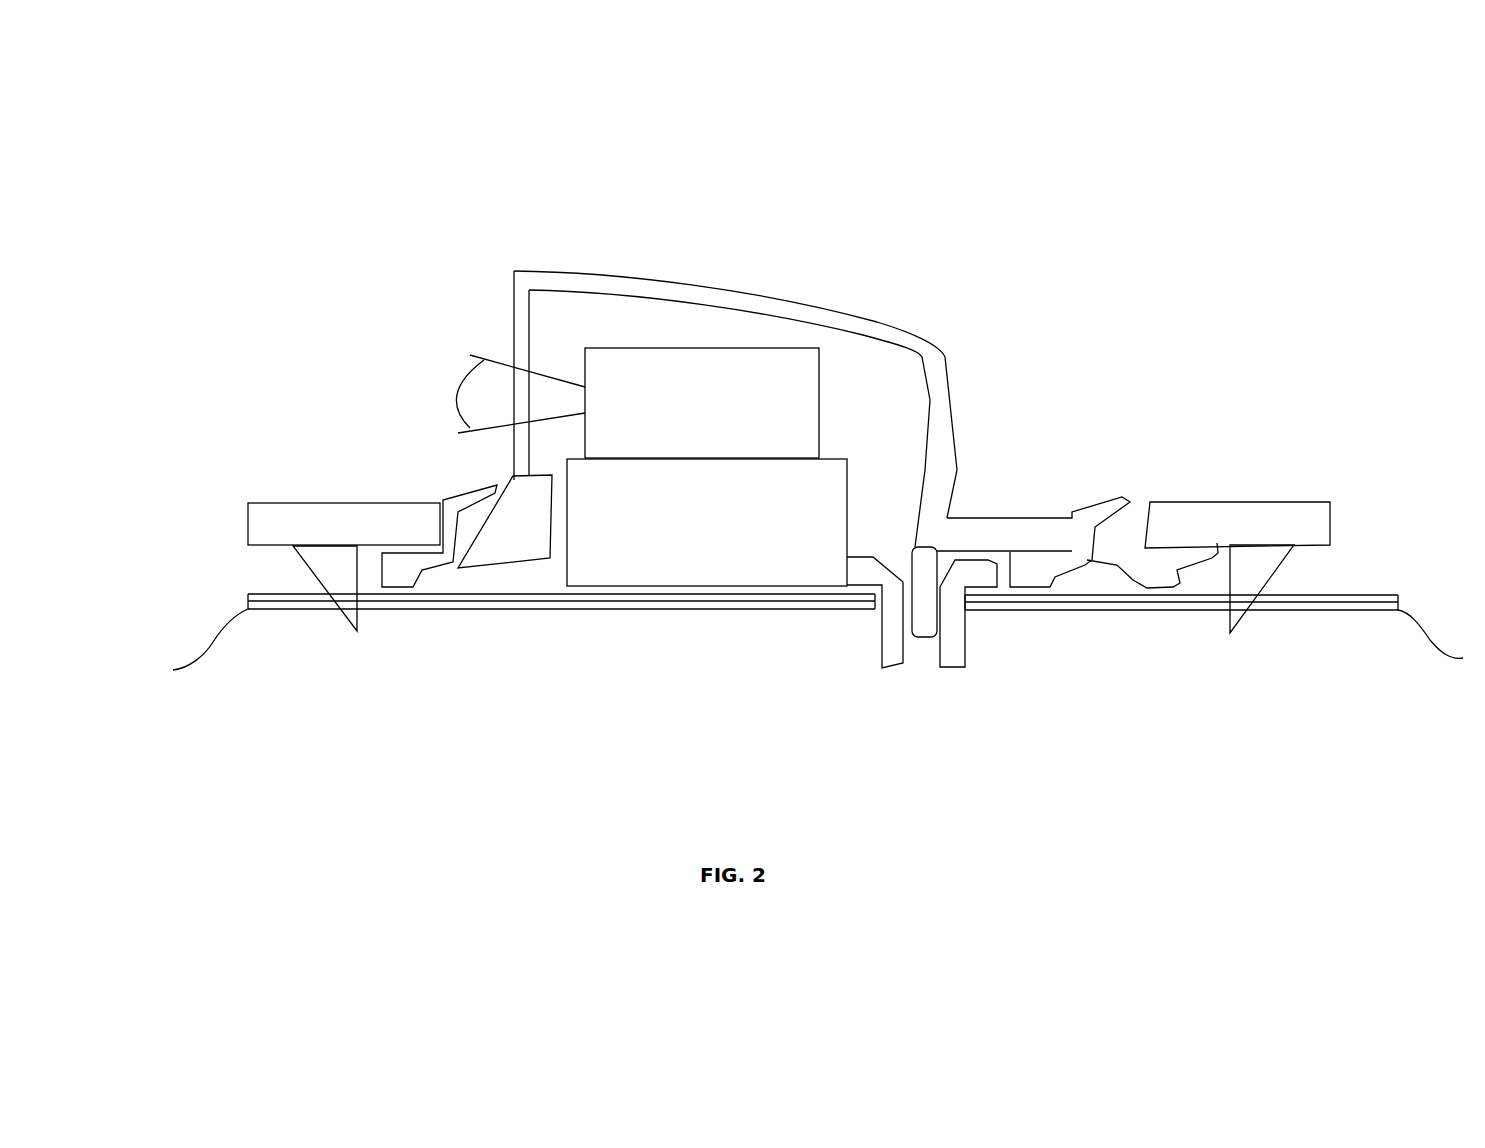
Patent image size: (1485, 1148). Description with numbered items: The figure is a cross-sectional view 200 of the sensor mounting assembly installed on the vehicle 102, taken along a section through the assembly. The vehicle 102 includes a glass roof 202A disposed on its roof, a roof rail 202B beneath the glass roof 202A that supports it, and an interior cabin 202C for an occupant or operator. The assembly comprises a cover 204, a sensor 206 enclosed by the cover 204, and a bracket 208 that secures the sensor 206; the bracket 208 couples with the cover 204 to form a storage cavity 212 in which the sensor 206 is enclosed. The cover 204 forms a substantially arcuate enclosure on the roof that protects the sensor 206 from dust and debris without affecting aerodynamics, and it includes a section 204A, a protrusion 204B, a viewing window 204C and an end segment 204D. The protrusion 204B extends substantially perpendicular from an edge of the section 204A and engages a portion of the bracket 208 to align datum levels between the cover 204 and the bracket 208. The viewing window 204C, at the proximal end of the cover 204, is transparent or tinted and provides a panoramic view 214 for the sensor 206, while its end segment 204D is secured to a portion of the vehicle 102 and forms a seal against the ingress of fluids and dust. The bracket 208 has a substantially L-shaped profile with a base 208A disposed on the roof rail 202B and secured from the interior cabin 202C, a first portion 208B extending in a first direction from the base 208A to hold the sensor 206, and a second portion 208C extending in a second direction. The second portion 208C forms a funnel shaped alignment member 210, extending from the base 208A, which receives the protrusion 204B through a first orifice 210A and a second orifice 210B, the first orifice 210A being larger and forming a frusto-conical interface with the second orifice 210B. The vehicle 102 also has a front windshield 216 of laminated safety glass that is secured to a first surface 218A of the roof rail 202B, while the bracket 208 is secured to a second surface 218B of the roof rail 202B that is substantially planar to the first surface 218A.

The cross-sectional view 200 is at (160, 188).
The vehicle 102 is at (216, 652).
The glass roof 202A is at (1280, 524).
The roof rail 202B is at (243, 595).
The interior cabin 202C is at (398, 662).
The cover 204 is at (781, 294).
The section 204A is at (950, 524).
The protrusion 204B is at (933, 626).
The viewing window 204C is at (521, 325).
The end segment 204D is at (508, 542).
The sensor 206 is at (802, 382).
The bracket 208 is at (859, 477).
The base 208A is at (671, 592).
The first portion 208B is at (784, 472).
The second portion 208C is at (891, 613).
The funnel shaped alignment member 210 is at (946, 620).
The first orifice 210A is at (951, 562).
The second orifice 210B is at (922, 651).
The storage cavity 212 is at (653, 324).
The panoramic view 214 is at (454, 391).
The front windshield 216 is at (290, 524).
The first surface 218A is at (308, 608).
The second surface 218B is at (600, 605).